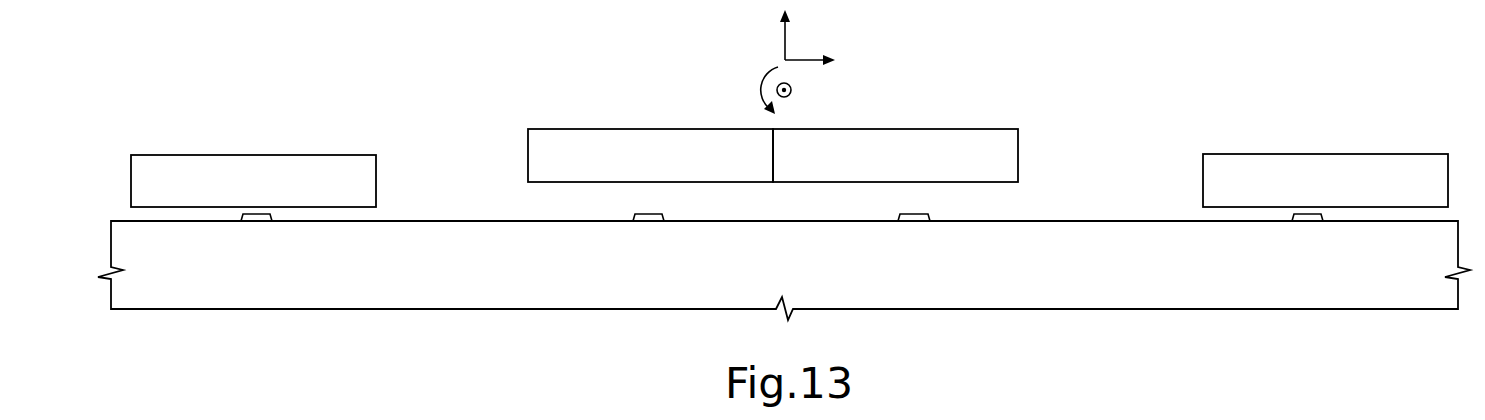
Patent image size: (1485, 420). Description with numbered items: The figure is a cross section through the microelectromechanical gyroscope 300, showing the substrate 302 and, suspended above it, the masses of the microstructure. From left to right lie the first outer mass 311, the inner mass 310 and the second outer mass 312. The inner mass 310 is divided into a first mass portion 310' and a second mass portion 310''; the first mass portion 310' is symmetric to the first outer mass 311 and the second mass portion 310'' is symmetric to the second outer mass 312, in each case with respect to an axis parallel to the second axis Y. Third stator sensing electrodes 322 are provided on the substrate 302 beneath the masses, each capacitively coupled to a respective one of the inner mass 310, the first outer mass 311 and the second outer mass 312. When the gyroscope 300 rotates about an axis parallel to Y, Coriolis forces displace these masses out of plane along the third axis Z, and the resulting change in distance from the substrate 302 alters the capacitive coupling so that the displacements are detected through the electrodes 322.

The microelectromechanical gyroscope 300 is at (1384, 113).
The substrate 302 is at (446, 300).
The inner mass 310 is at (781, 112).
The first mass portion 310' is at (650, 131).
The second mass portion 310'' is at (903, 127).
The first outer mass 311 is at (254, 163).
The second outer mass 312 is at (1268, 160).
The third stator sensing electrodes 322 is at (252, 223).